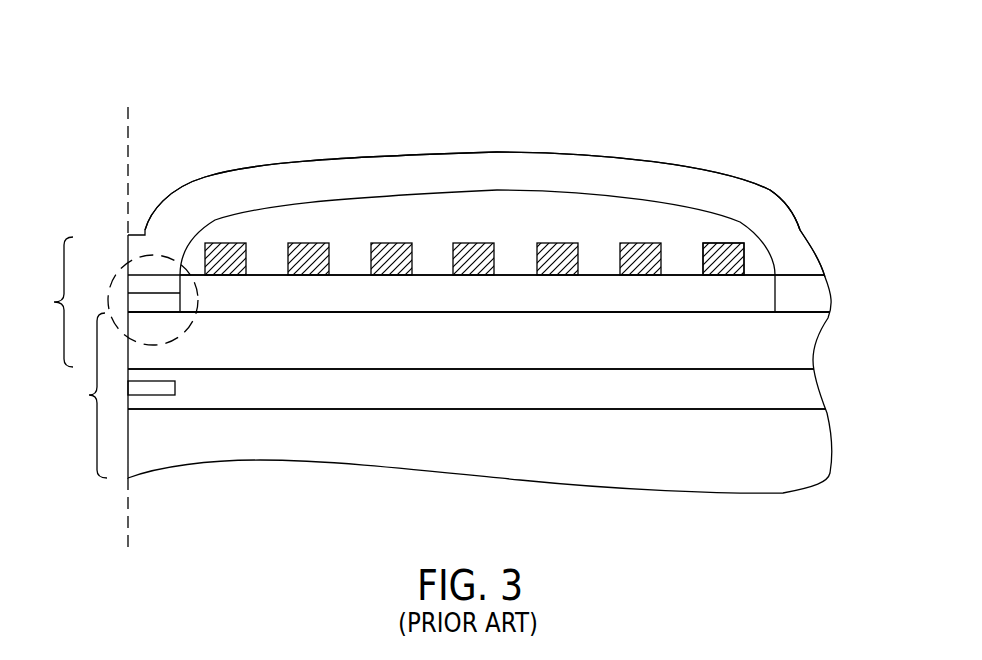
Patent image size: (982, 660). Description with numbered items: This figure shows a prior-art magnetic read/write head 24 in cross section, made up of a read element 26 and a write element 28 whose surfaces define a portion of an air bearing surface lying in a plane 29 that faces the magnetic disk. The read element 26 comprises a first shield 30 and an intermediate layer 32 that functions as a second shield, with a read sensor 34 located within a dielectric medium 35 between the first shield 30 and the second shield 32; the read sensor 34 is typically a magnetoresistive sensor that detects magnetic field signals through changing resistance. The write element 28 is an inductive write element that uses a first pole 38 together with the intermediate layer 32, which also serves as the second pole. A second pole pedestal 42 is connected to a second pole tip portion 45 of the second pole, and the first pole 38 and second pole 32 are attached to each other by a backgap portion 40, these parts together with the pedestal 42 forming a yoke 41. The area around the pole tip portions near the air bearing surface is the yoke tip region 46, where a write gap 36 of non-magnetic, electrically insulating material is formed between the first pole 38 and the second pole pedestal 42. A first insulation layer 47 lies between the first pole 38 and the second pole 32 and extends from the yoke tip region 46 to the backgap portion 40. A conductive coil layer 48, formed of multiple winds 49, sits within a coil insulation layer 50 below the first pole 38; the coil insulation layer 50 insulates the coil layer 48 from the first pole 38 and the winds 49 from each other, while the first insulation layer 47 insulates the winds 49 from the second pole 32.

The magnetic read/write head 24 is at (686, 98).
The read element 26 is at (81, 395).
The write element 28 is at (49, 302).
The plane 29 is at (127, 132).
The first shield 30 is at (366, 450).
The intermediate layer 32 is at (457, 353).
The read sensor 34 is at (175, 389).
The dielectric medium 35 is at (570, 393).
The write gap 36 is at (162, 283).
The first pole 38 is at (447, 168).
The backgap portion 40 is at (808, 298).
The yoke 41 is at (796, 199).
The second pole pedestal 42 is at (147, 304).
The second pole tip portion 45 is at (162, 331).
The yoke tip region 46 is at (160, 248).
The first insulation layer 47 is at (497, 297).
The conductive coil layer 48 is at (753, 262).
The winds 49 is at (555, 253).
The coil insulation layer 50 is at (383, 208).